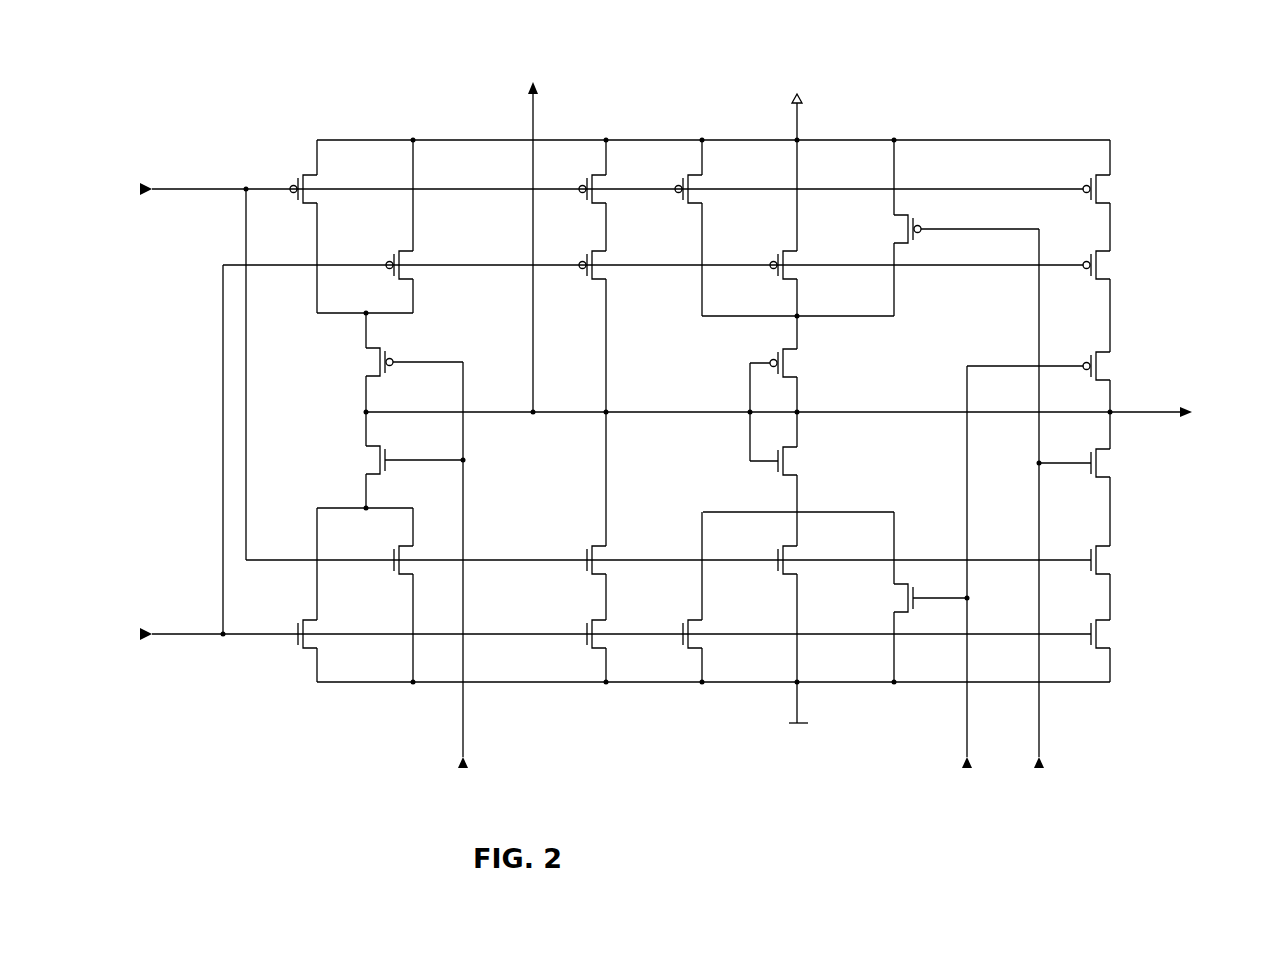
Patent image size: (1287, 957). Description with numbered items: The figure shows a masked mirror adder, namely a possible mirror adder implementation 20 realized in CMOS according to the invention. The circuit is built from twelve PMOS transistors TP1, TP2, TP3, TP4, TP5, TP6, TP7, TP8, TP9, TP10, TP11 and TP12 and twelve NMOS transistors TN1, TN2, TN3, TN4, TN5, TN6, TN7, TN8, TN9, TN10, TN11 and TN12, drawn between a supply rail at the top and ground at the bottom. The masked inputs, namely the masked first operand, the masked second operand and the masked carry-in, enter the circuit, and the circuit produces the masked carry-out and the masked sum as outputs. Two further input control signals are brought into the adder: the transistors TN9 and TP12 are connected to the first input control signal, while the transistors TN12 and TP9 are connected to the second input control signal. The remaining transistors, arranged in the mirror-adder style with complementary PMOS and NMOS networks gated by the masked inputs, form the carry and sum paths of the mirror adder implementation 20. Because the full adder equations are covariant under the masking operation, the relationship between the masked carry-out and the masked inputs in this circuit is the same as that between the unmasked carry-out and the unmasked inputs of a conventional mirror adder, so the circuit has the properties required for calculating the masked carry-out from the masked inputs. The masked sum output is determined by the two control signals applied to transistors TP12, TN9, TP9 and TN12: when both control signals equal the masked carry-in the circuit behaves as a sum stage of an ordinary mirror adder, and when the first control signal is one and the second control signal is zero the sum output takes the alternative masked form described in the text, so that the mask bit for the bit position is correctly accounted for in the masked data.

The mirror adder implementation 20 is at (348, 103).
The transistor TP1 is at (320, 186).
The transistor TP2 is at (416, 262).
The transistor TP3 is at (370, 362).
The transistor TP4 is at (609, 186).
The transistor TP5 is at (609, 262).
The transistor TP6 is at (705, 186).
The transistor TP7 is at (800, 262).
The transistor TP8 is at (800, 363).
The transistor TP9 is at (898, 229).
The transistor TP10 is at (1116, 189).
The transistor TP11 is at (1116, 265).
The transistor TP12 is at (1116, 366).
The transistor TN1 is at (325, 640).
The transistor TN2 is at (422, 565).
The transistor TN3 is at (365, 460).
The transistor TN4 is at (615, 640).
The transistor TN5 is at (615, 565).
The transistor TN6 is at (711, 640).
The transistor TN7 is at (806, 565).
The transistor TN8 is at (805, 461).
The transistor TN9 is at (893, 598).
The transistor TN10 is at (1121, 634).
The transistor TN11 is at (1121, 560).
The transistor TN12 is at (1121, 463).